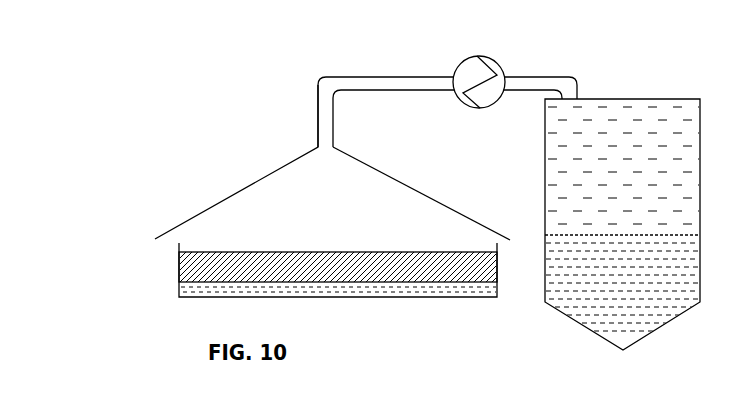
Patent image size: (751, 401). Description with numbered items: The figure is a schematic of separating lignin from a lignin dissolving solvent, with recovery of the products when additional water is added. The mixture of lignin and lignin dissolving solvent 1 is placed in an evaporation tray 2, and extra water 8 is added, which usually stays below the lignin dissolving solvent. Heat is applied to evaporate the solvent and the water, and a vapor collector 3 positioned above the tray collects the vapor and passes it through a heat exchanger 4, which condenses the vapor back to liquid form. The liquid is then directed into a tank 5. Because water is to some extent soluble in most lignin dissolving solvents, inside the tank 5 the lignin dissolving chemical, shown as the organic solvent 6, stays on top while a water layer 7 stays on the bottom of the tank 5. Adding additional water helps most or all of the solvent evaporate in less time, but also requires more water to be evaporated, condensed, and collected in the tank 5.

The mixture of lignin and lignin dissolving solvent 1 is at (317, 245).
The evaporation tray 2 is at (179, 243).
The vapor collector 3 is at (208, 206).
The heat exchanger 4 is at (459, 61).
The tank 5 is at (602, 98).
The organic solvent in tank 6 is at (568, 185).
The water layer 7 is at (613, 322).
The extra water 8 is at (400, 290).